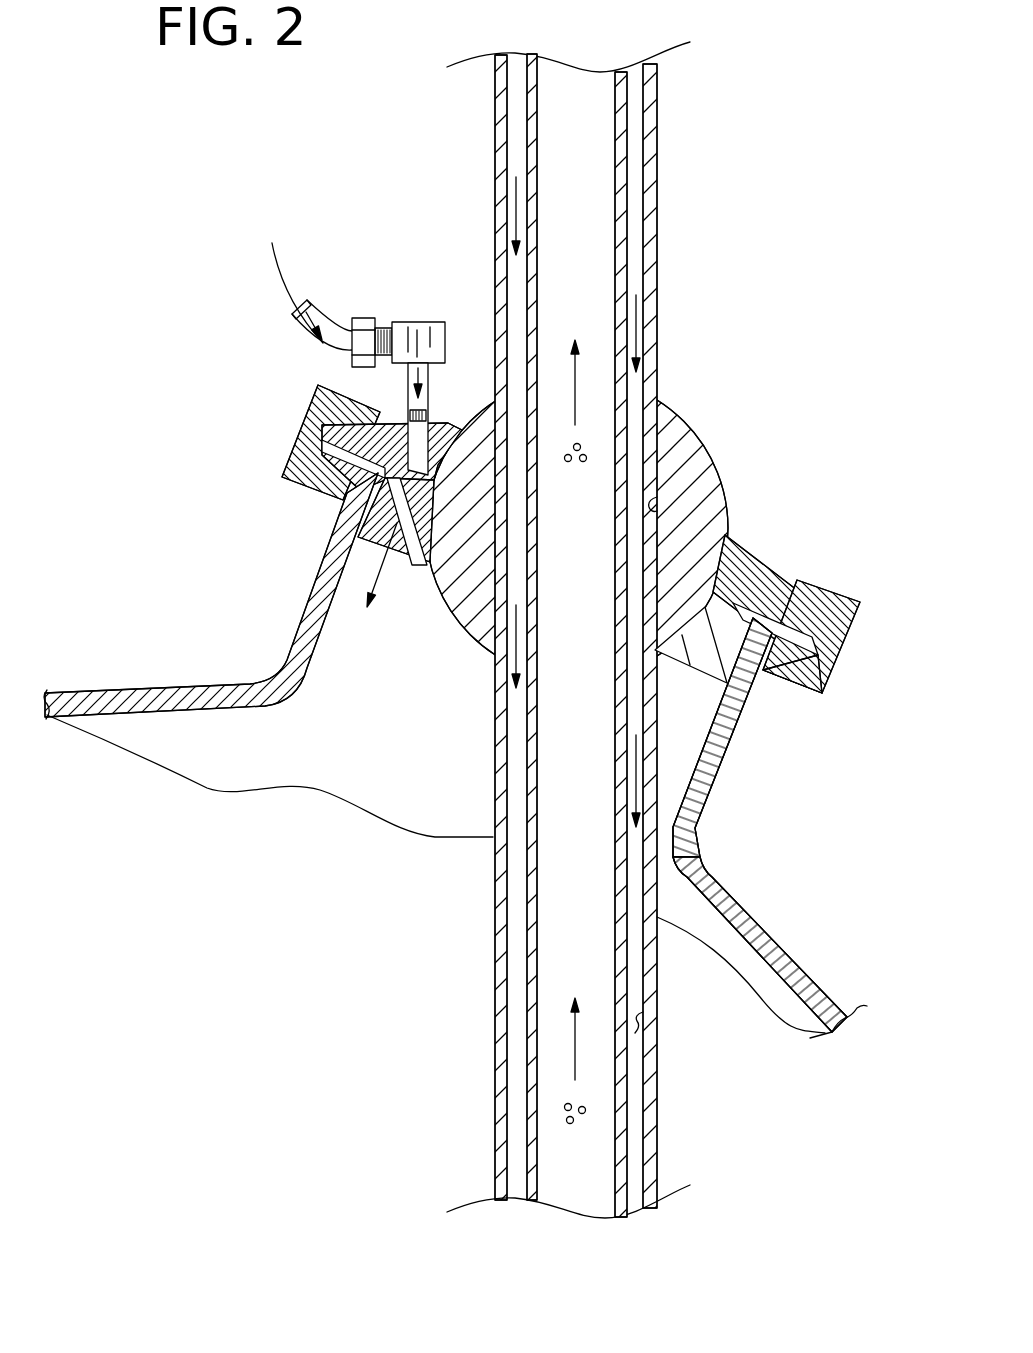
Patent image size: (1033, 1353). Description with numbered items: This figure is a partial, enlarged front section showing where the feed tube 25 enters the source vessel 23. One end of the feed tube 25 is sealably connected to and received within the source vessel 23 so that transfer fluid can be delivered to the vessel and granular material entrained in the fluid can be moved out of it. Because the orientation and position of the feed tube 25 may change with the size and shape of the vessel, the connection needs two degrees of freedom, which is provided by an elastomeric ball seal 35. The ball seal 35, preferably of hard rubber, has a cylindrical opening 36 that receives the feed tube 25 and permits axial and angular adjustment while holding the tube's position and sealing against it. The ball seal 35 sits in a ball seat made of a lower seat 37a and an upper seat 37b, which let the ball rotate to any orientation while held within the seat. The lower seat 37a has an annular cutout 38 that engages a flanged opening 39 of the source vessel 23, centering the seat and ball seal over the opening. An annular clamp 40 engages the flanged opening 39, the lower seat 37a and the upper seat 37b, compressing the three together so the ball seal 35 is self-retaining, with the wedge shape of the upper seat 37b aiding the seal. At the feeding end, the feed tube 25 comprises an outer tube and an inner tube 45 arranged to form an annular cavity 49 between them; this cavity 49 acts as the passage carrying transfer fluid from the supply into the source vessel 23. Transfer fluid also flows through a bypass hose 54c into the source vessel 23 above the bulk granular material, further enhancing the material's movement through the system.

The source vessel 23 is at (175, 692).
The feed tube 25 is at (657, 187).
The elastomeric ball seal 35 is at (687, 447).
The cylindrical opening 36 is at (657, 495).
The lower seat 37a is at (705, 667).
The upper seat 37b is at (735, 537).
The annular cutout 38 is at (766, 657).
The flanged opening 39 is at (800, 687).
The annular clamp 40 is at (853, 600).
The inner tube 45 is at (532, 1003).
The annular cavity 49 is at (647, 1022).
The bypass hose 54c is at (323, 345).